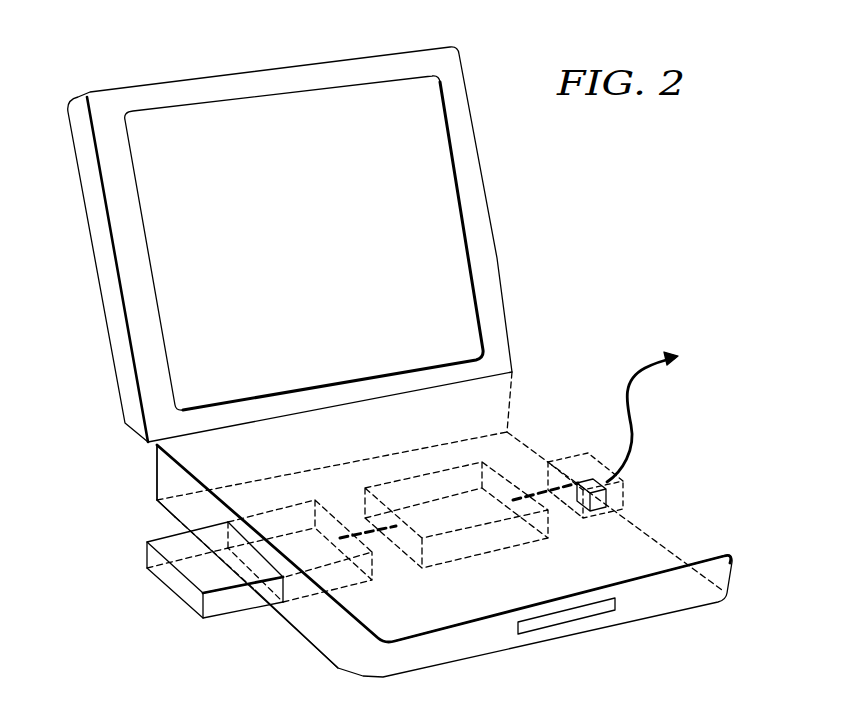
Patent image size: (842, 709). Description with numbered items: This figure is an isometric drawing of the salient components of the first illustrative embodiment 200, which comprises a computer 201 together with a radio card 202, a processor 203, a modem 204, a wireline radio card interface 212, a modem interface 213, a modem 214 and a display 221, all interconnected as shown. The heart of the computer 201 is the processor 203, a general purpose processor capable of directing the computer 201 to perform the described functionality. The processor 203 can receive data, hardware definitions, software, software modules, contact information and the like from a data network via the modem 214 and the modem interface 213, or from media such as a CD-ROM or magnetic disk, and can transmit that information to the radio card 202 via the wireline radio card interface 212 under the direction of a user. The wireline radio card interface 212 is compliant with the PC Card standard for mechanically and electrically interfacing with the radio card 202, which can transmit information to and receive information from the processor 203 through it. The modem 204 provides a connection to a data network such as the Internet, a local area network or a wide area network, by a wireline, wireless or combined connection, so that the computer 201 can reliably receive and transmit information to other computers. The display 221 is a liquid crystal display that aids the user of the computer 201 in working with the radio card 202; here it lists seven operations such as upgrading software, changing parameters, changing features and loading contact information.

The first illustrative embodiment 200 is at (638, 147).
The computer 201 is at (643, 600).
The radio card 202 is at (215, 610).
The processor 203 is at (467, 553).
The modem 204 is at (620, 493).
The wireline radio card interface 212 is at (362, 530).
The modem interface 213 is at (533, 492).
The modem 214 is at (633, 390).
The display 221 is at (470, 318).